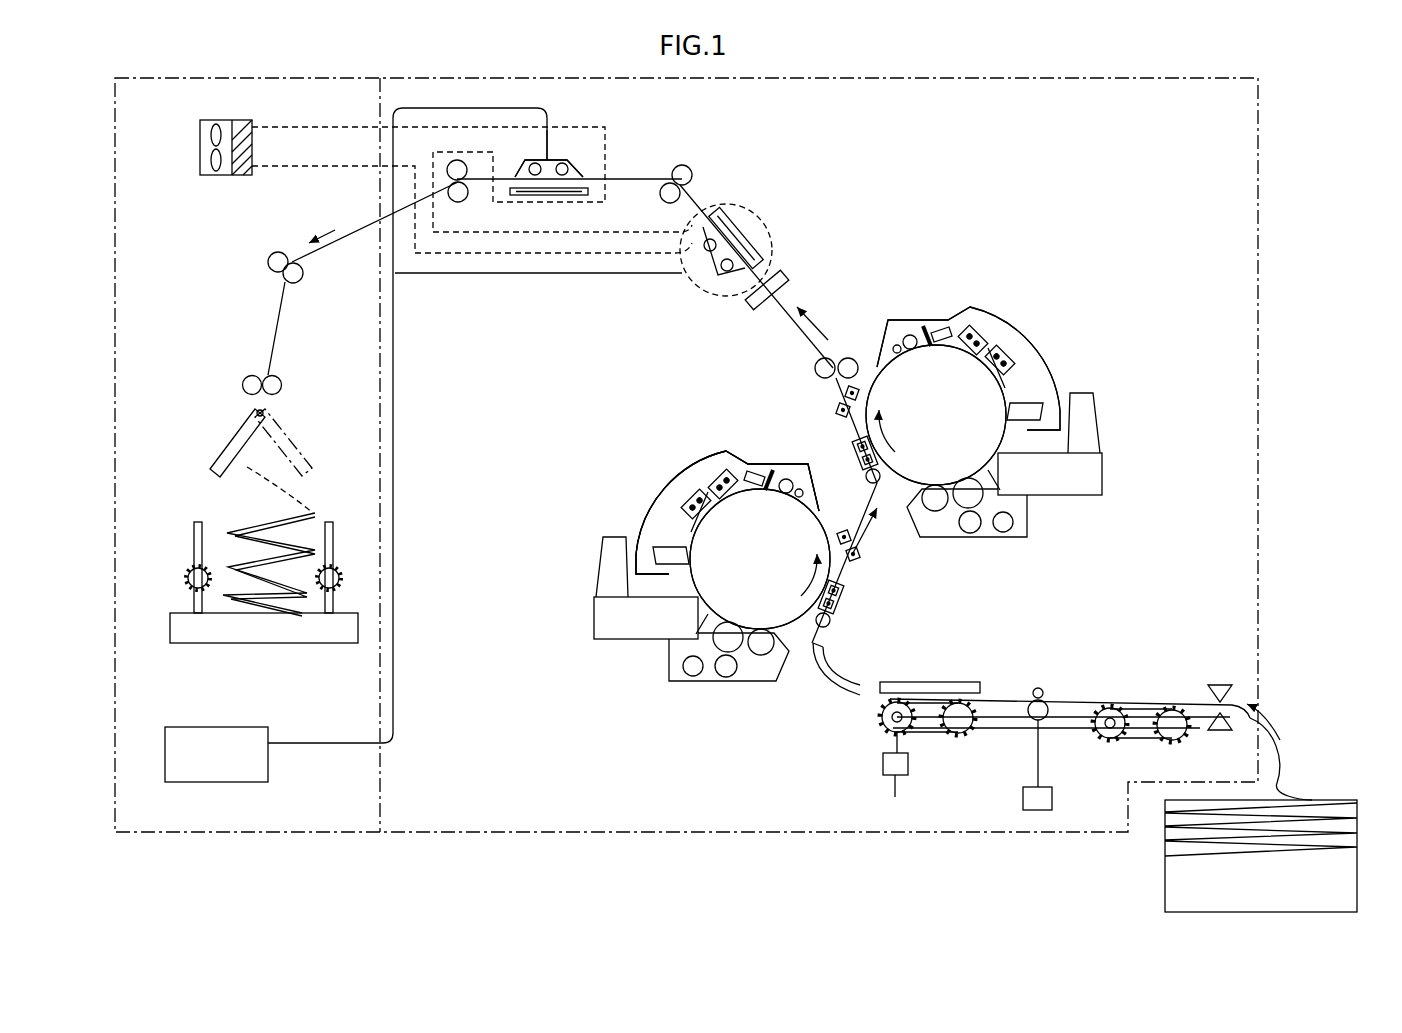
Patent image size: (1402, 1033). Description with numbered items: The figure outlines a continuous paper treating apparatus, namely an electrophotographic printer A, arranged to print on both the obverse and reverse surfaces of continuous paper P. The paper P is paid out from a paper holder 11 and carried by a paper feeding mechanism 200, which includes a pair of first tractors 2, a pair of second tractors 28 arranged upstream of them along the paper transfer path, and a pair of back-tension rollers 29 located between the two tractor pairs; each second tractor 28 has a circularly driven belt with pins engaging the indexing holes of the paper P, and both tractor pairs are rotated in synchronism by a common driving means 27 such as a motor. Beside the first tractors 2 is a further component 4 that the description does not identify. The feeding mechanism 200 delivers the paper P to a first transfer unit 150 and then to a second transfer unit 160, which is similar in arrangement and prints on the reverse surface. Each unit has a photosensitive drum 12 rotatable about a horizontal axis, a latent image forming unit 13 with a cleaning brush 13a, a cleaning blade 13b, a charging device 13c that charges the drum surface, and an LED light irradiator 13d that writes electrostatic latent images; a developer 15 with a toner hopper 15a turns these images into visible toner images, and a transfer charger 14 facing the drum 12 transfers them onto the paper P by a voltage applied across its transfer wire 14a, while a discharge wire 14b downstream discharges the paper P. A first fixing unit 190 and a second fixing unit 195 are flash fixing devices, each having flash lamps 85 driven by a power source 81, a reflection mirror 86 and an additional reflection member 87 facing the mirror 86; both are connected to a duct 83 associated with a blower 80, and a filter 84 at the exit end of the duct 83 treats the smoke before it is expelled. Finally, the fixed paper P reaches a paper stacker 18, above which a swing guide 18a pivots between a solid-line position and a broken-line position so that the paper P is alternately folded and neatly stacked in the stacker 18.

The printer A is at (1278, 198).
The first tractors 2 is at (870, 725).
The transfer guide plate 4 is at (933, 687).
The paper holder 11 is at (1357, 800).
The photosensitive drum 12 is at (873, 387).
The latent image forming unit 13 is at (688, 468).
The cleaning brush 13a is at (903, 338).
The cleaning blade 13b is at (925, 325).
The charging device 13c is at (996, 322).
The LED light irradiator 13d is at (1030, 405).
The transfer charger 14 is at (884, 502).
The transfer wire 14a is at (878, 462).
The discharge wire 14b is at (868, 397).
The developer 15 is at (948, 532).
The toner hopper 15a is at (1080, 483).
The paper stacker 18 is at (188, 535).
The swing guide 18a is at (237, 440).
The common driving means 27 is at (896, 779).
The second tractors 28 is at (1110, 740).
The back-tension rollers 29 is at (1042, 695).
The blower 80 is at (212, 175).
The power source 81 is at (212, 742).
The duct 83 is at (518, 242).
The filter 84 is at (238, 175).
The flash lamps 85 is at (566, 163).
The reflection mirror 86 is at (535, 163).
The additional reflection member 87 is at (548, 198).
The first transfer unit 150 is at (655, 657).
The second transfer unit 160 is at (1043, 348).
The first fixing unit 190 is at (763, 238).
The second fixing unit 195 is at (593, 162).
The paper feeding mechanism 200 is at (1028, 713).
The continuous paper P is at (870, 695).